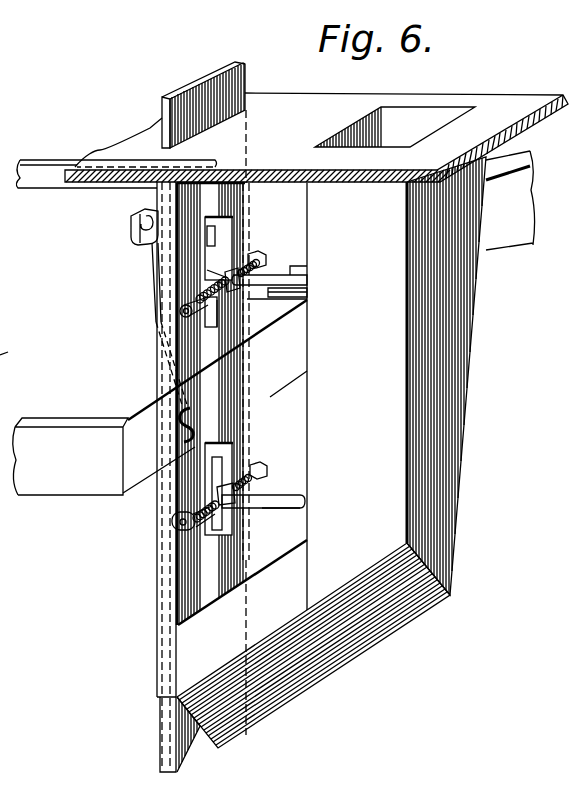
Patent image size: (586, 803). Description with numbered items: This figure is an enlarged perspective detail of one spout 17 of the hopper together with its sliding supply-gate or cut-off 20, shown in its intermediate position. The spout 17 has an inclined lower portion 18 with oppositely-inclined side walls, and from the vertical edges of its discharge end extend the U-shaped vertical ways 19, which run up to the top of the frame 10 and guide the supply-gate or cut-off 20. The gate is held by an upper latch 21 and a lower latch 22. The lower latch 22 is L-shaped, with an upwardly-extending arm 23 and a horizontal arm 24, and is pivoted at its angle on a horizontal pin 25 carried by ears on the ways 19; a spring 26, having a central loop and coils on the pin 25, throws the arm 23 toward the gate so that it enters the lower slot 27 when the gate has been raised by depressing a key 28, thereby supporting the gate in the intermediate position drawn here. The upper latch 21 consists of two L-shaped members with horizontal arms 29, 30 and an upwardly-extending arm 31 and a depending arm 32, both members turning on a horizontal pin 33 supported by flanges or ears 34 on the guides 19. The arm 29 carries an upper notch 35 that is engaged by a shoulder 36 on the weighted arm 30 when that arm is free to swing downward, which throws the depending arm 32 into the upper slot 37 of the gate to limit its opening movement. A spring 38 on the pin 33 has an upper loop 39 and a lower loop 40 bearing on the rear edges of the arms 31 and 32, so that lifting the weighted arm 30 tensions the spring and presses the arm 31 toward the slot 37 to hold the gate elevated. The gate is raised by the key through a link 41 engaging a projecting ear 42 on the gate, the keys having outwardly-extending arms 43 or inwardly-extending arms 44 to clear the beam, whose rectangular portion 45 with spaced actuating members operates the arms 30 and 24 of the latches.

The frame 10 is at (316, 137).
The spout 17 is at (418, 376).
The inclined lower portion 18 is at (313, 465).
The vertical ways 19 is at (249, 193).
The supply-gate or cut-off 20 is at (200, 578).
The upper latch 21 is at (269, 270).
The lower latch 22 is at (263, 490).
The arm of lower latch 23 is at (219, 455).
The arm of lower latch 24 is at (278, 503).
The horizontal pin 25 is at (192, 508).
The spring 26 is at (265, 469).
The slot 27 is at (207, 473).
The key 28 is at (57, 183).
The horizontal arm 29 is at (252, 293).
The horizontal arm 30 is at (297, 280).
The upwardly-extending arm 31 is at (222, 233).
The depending arm 32 is at (216, 328).
The horizontal pin or pivot 33 is at (189, 313).
The flanges or ears 34 is at (182, 309).
The upper notch 35 is at (268, 290).
The shoulder 36 is at (283, 291).
The upper slot or opening 37 is at (210, 323).
The spring 38 is at (187, 293).
The upper loop 39 is at (228, 263).
The lower loop 40 is at (240, 303).
The link 41 is at (150, 262).
The projecting ear 42 is at (184, 424).
The outwardly-extending arm 43 is at (147, 211).
The inwardly-extending arm 44 is at (8, 358).
The rectangular portion 45 is at (160, 397).